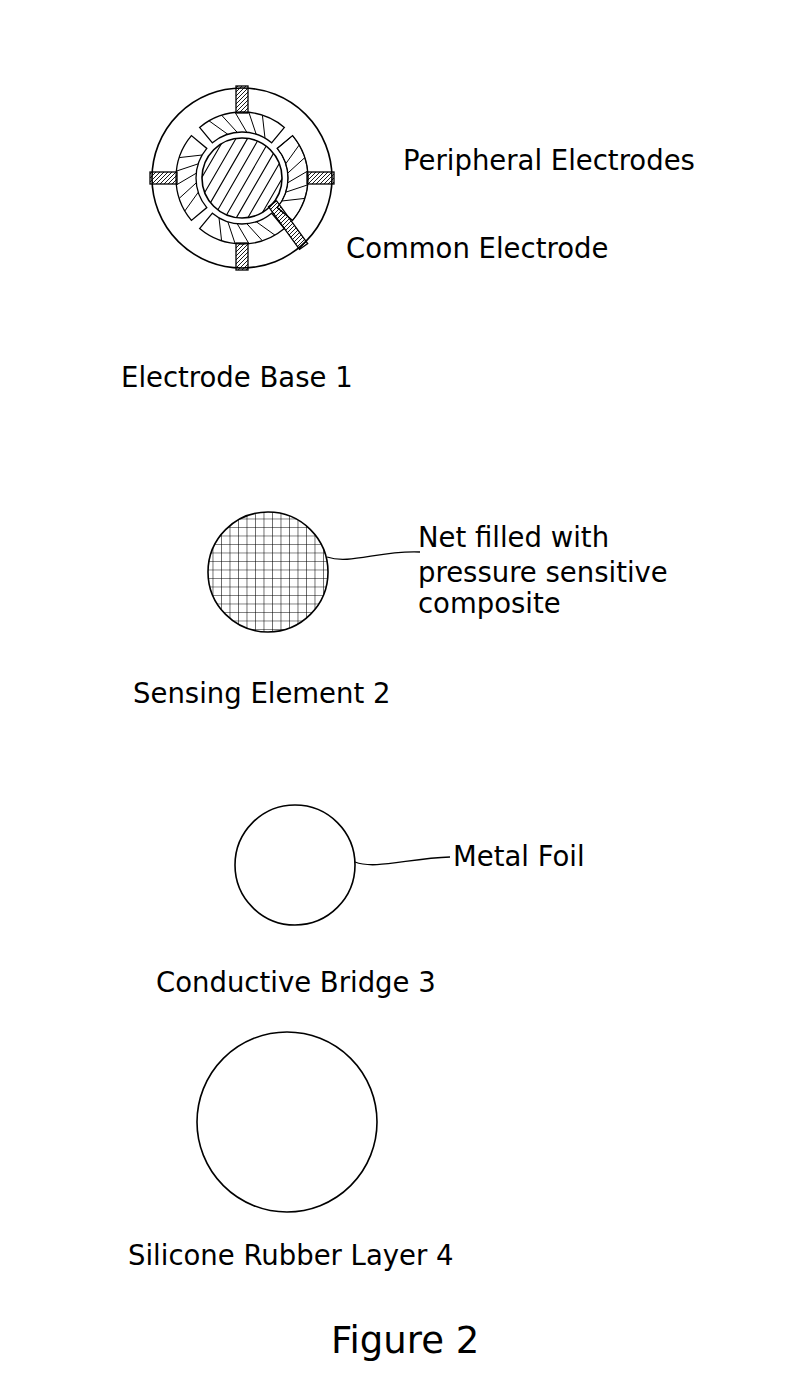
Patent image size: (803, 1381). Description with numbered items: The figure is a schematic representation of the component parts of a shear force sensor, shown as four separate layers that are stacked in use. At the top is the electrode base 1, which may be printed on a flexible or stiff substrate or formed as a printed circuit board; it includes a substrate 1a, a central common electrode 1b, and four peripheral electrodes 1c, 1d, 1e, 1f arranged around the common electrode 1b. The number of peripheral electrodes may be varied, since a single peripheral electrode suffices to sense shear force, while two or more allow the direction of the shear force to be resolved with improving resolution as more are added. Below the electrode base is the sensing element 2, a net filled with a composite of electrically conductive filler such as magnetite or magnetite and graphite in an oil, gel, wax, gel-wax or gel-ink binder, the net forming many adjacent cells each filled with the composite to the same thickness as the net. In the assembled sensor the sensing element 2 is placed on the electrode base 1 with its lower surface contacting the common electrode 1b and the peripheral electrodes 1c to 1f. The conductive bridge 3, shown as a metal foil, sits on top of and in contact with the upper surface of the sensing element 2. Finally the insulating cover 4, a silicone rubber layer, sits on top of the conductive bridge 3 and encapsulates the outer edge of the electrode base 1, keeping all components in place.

The electrode base 1 is at (136, 213).
The substrate 1a is at (317, 205).
The common electrode 1b is at (295, 246).
The peripheral electrode 1c is at (230, 233).
The peripheral electrode 1d is at (183, 150).
The peripheral electrode 1e is at (266, 113).
The peripheral electrode 1f is at (306, 168).
The sensing element 2 is at (201, 558).
The conductive bridge 3 is at (220, 853).
The insulating cover 4 is at (176, 1125).